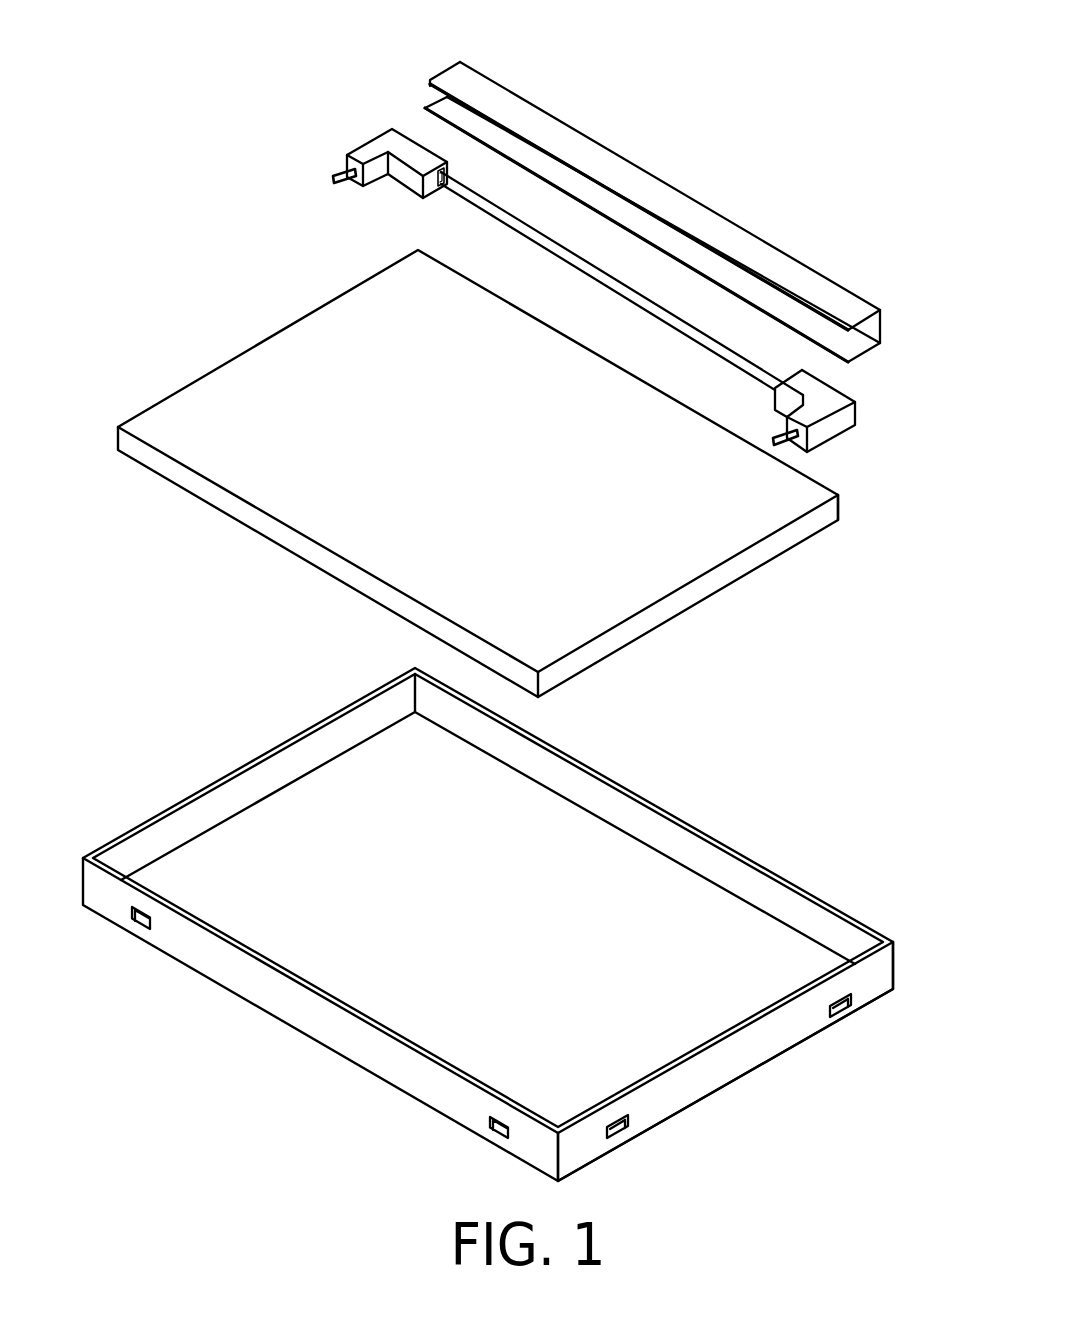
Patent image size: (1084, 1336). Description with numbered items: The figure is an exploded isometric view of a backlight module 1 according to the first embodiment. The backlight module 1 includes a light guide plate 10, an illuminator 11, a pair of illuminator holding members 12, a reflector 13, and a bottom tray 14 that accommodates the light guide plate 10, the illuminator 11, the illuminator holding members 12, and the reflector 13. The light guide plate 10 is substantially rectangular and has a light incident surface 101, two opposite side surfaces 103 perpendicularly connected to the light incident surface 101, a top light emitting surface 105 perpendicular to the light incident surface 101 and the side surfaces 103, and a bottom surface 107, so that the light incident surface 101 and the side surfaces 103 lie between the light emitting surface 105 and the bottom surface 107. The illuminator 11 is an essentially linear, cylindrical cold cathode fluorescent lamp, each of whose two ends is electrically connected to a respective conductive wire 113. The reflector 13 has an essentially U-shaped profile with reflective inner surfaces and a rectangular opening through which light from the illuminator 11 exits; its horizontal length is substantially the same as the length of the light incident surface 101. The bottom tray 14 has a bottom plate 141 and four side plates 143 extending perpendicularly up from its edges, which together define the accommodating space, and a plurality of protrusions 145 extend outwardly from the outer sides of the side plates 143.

The backlight module 1 is at (428, 25).
The light guide plate 10 is at (512, 474).
The light incident surface 101 is at (836, 491).
The side surfaces 103 is at (653, 618).
The light emitting surface 105 is at (258, 382).
The bottom surface 107 is at (330, 571).
The illuminator 11 is at (473, 195).
The illuminator holding members 12 is at (354, 143).
The conductive wire 113 is at (347, 175).
The reflector 13 is at (647, 198).
The bottom tray 14 is at (488, 924).
The bottom plate 141 is at (642, 868).
The side plates 143 is at (733, 1062).
The protrusions 145 is at (846, 1012).